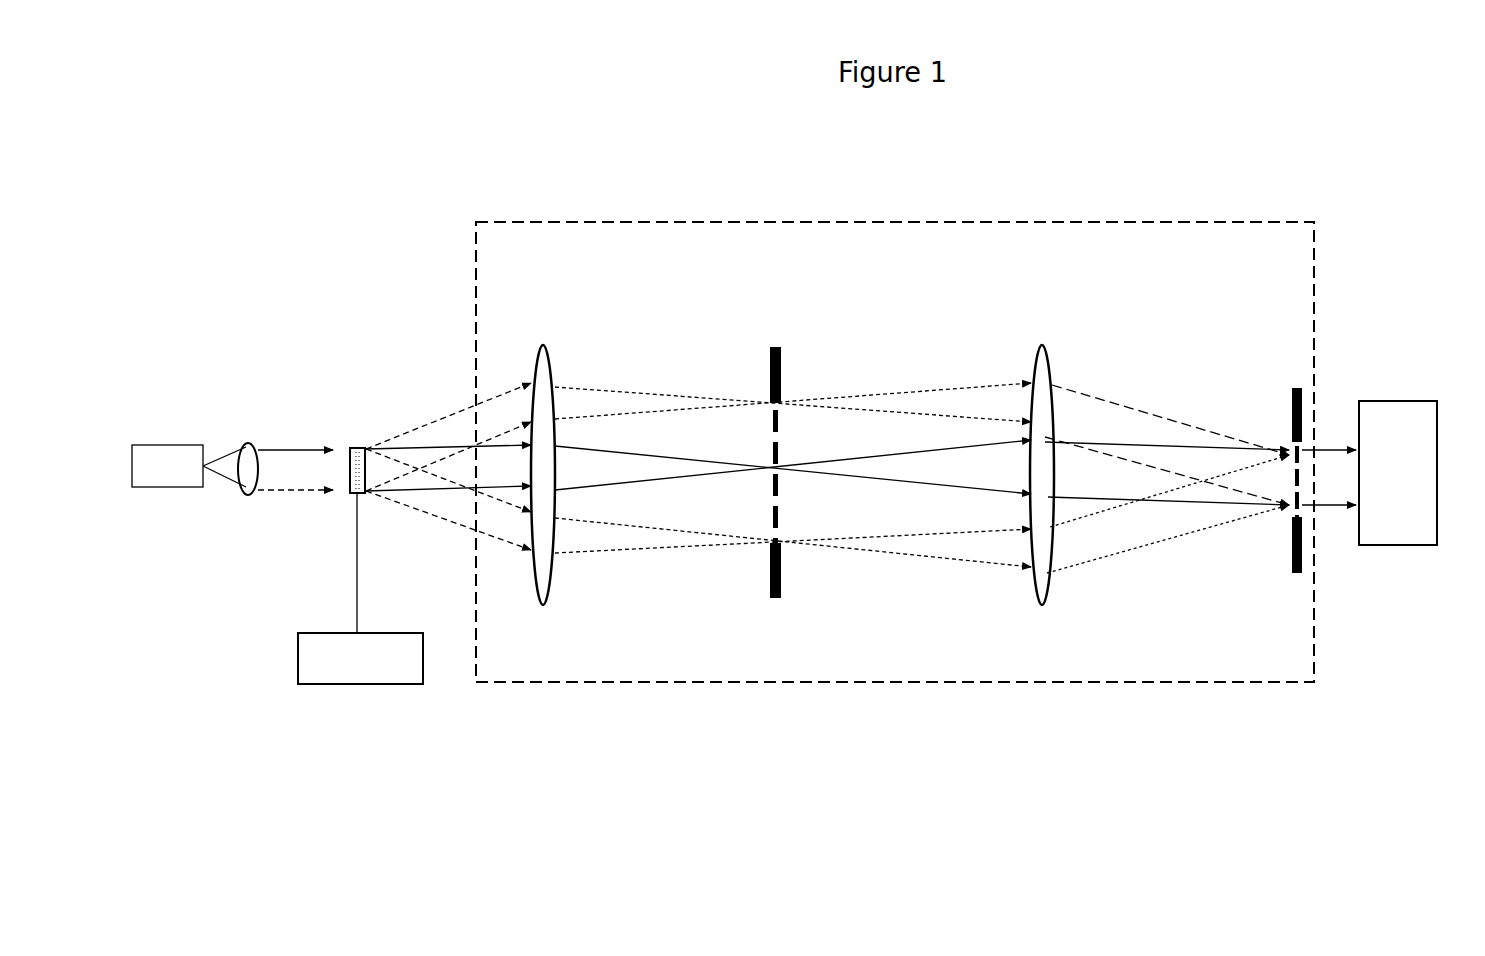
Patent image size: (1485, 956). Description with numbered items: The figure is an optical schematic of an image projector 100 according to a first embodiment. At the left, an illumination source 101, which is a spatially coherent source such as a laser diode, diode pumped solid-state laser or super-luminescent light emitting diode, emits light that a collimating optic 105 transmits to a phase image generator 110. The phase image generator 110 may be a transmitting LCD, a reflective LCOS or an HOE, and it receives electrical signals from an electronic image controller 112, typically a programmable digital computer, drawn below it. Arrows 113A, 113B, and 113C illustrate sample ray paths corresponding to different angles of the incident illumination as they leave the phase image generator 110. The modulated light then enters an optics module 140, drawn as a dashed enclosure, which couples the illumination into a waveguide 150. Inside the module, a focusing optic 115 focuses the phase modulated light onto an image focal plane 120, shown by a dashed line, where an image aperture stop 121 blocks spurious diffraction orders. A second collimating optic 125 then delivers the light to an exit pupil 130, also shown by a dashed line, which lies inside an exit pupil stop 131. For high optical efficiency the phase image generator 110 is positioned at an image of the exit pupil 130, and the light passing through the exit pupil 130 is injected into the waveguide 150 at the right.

The image projector 100 is at (480, 123).
The illumination source 101 is at (184, 477).
The collimating optic 105 is at (248, 443).
The phase image generator 110 is at (356, 447).
The electronic image controller 112 is at (377, 674).
The arrow 113A is at (629, 415).
The arrow 113B is at (725, 475).
The arrow 113C is at (642, 550).
The focusing optic 115 is at (543, 343).
The image focal plane 120 is at (827, 479).
The image aperture stop 121 is at (782, 594).
The collimating optic 125 is at (1042, 343).
The exit pupil 130 is at (1254, 491).
The exit pupil stop 131 is at (1293, 558).
The optics module 140 is at (657, 222).
The waveguide 150 is at (1415, 485).